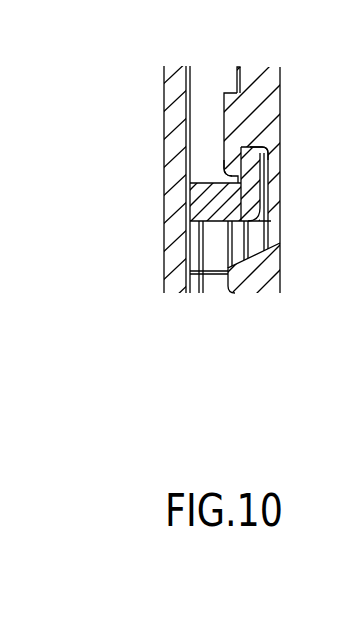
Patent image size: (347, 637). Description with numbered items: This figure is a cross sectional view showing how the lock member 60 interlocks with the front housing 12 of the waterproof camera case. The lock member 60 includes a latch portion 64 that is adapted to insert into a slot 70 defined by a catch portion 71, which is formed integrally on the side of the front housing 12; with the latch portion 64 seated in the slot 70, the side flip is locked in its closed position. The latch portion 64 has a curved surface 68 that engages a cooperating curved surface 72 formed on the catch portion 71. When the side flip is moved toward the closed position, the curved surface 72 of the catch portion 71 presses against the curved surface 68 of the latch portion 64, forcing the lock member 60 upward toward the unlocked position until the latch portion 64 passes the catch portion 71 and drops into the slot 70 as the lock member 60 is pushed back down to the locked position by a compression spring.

The front housing 12 is at (163, 119).
The lock member 60 is at (224, 164).
The latch portion 64 is at (230, 184).
The curved surface 68 is at (222, 189).
The slot 70 is at (220, 176).
The catch portion 71 is at (264, 165).
The curved surface 72 is at (262, 149).